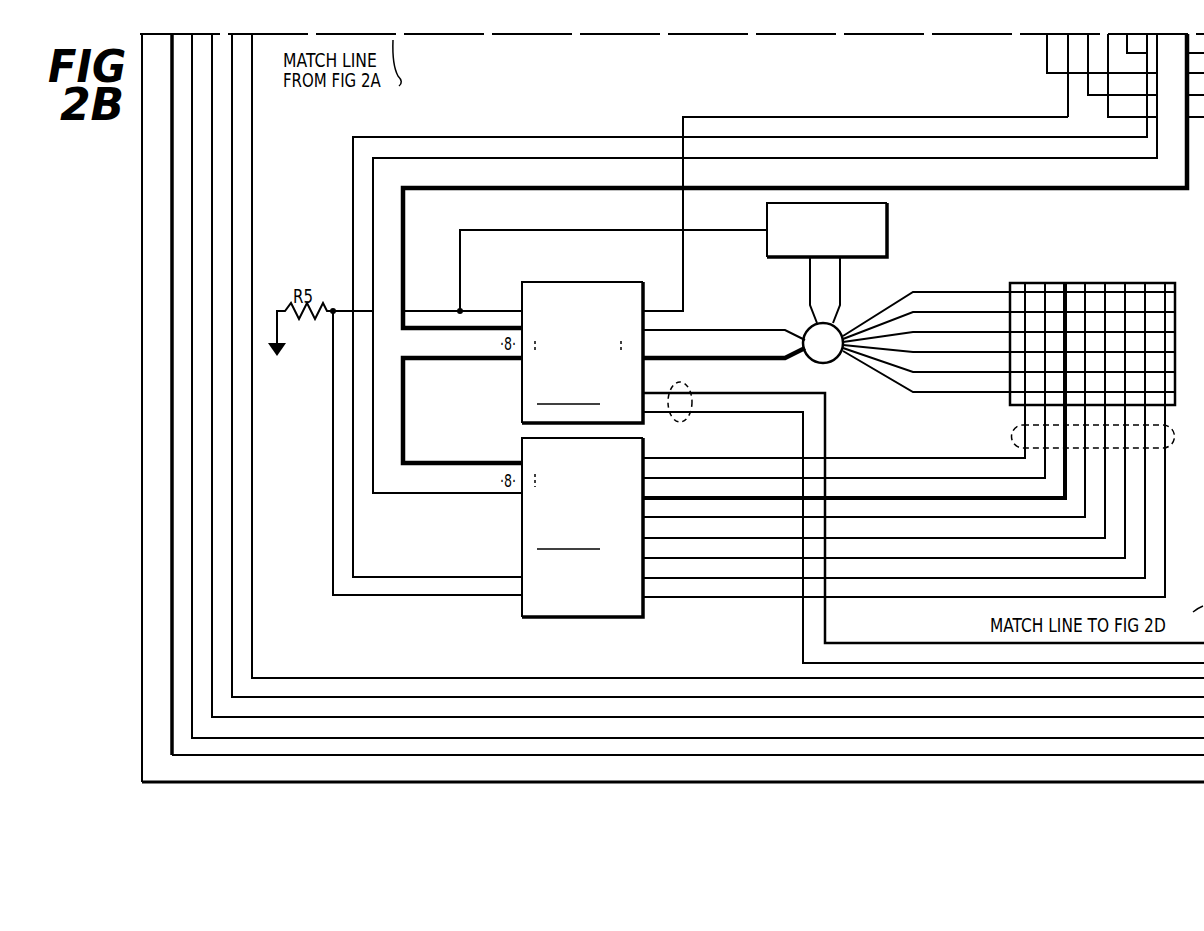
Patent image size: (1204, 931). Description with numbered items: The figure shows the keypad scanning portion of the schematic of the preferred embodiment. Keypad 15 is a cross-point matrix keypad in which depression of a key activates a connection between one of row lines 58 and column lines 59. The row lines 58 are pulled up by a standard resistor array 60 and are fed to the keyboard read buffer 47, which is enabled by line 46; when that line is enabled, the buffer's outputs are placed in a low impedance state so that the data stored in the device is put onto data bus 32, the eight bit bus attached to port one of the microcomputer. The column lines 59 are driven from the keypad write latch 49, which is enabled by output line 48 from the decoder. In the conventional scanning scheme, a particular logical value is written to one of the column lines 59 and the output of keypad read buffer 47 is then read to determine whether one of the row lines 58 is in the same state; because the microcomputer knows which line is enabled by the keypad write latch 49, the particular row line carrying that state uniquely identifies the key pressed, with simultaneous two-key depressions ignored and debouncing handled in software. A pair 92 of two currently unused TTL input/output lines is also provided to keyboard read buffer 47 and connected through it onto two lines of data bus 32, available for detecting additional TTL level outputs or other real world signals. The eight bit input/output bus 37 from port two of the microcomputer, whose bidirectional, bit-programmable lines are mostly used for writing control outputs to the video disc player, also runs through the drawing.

The keypad 15 is at (1017, 282).
The 8 bit bus 32 is at (553, 190).
The 8 bit input/output bus 37 is at (141, 442).
The line 46 is at (684, 282).
The keyboard read buffer 47 is at (582, 281).
The output line 48 is at (355, 542).
The keypad write latch 49 is at (572, 618).
The row lines 58 is at (717, 329).
The column lines 59 is at (1013, 437).
The resistor array 60 is at (887, 232).
The pair of TTL input/output lines 92 is at (689, 417).